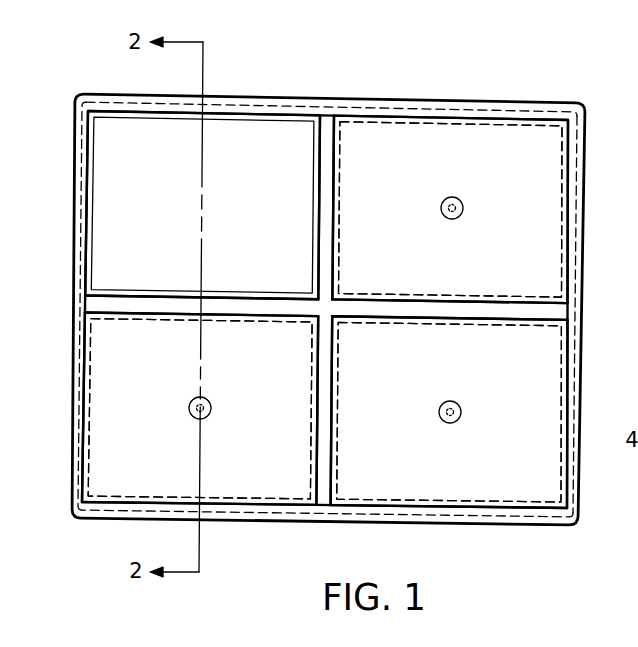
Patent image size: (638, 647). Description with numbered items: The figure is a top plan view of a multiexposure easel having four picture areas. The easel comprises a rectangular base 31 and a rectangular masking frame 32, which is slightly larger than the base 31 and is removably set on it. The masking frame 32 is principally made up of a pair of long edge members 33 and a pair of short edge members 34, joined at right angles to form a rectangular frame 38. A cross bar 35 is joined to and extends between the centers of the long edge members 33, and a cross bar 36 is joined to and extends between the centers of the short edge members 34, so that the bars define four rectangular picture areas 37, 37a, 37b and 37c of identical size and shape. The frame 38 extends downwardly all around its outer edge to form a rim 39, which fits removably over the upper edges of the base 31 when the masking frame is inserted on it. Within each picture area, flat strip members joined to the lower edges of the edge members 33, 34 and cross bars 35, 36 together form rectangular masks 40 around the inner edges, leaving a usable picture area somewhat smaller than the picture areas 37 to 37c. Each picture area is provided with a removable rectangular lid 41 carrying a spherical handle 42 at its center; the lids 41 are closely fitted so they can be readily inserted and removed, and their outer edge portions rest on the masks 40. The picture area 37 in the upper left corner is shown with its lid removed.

The rectangular base 31 is at (392, 108).
The rectangular masking frame 32 is at (352, 84).
The long edge members 33 is at (291, 97).
The short edge members 34 is at (583, 262).
The cross bar 35 is at (327, 183).
The cross bar 36 is at (216, 307).
The picture area 37 is at (225, 153).
The picture area 37a is at (442, 152).
The picture area 37b is at (522, 375).
The picture area 37c is at (127, 427).
The rectangular frame 38 is at (506, 93).
The rim 39 is at (583, 423).
The rectangular masks 40 is at (128, 119).
The removable rectangular lid 41 is at (458, 273).
The spherical handle 42 is at (464, 210).